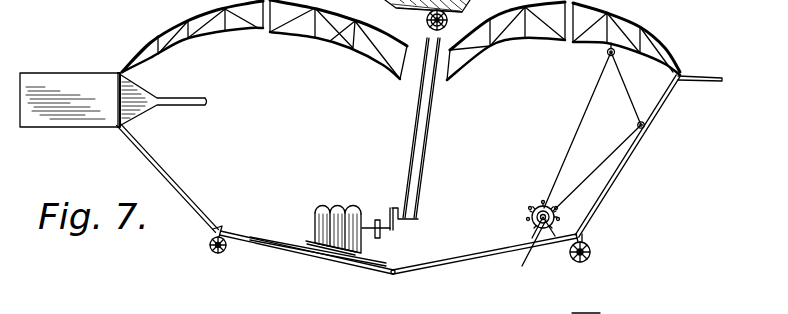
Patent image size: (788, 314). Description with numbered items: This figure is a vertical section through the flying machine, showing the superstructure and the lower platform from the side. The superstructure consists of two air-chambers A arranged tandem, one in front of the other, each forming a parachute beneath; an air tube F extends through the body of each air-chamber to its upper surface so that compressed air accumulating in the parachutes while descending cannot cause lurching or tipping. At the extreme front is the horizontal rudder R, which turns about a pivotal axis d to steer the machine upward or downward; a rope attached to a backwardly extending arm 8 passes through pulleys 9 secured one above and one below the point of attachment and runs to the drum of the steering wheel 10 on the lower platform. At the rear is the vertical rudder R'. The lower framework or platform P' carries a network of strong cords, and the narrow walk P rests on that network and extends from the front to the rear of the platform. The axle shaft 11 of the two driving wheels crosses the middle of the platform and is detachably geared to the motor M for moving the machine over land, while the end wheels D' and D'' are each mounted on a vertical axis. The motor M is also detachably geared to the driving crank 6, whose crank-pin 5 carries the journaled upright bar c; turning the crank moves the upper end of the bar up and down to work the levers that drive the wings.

The vertical rudder R' is at (113, 83).
The air-chamber A is at (237, 22).
The air tube F is at (268, 55).
The lower framework or platform P' is at (427, 16).
The upright bar c is at (423, 122).
The crank-pin 5 is at (418, 212).
The driving crank 6 is at (398, 231).
The motor M is at (349, 208).
The narrow walk P is at (399, 252).
The axle shaft 11 is at (393, 275).
The end wheel D'' is at (191, 259).
The end wheel D' is at (595, 250).
The steering wheel 10 is at (535, 208).
The backwardly extending arm 8 is at (631, 80).
The pulley 9 is at (607, 56).
The horizontal rudder R is at (700, 64).
The pivotal axis d is at (683, 84).